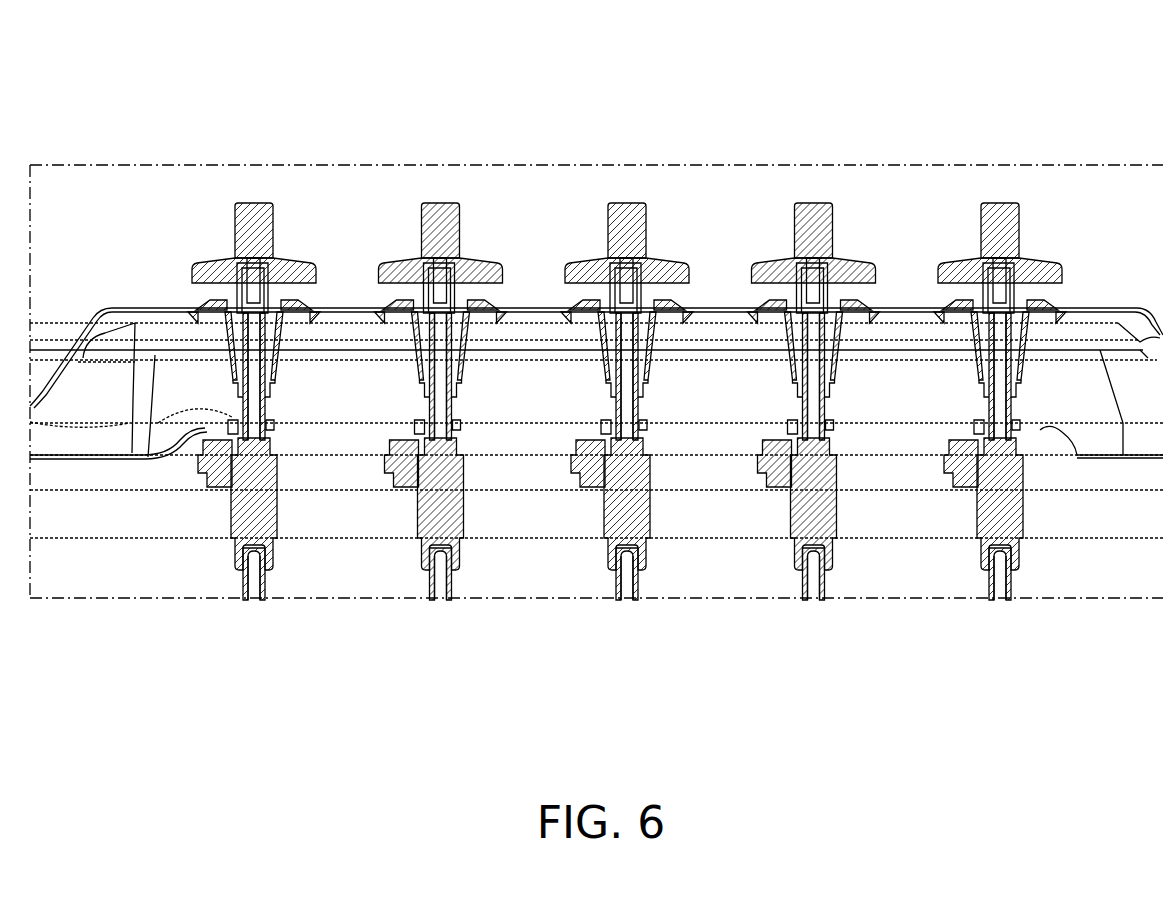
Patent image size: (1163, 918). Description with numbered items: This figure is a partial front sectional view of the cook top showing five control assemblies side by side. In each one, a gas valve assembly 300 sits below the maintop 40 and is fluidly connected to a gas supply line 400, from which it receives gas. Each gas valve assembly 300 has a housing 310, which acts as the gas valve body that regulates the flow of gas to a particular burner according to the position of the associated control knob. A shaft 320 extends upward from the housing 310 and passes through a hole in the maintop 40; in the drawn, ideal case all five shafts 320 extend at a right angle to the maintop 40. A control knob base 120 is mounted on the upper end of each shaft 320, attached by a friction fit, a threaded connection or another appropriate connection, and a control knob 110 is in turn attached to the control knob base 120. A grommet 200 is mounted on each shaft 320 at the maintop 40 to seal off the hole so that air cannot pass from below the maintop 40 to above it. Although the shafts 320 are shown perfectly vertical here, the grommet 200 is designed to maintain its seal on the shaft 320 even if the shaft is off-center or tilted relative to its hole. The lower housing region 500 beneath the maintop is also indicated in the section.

The maintop 40 is at (1087, 307).
The control knob 110 is at (598, 159).
The control knob base 120 is at (627, 156).
The grommet 200 is at (630, 245).
The gas valve assembly 300 is at (574, 543).
The housing 310 is at (640, 585).
The shaft 320 is at (575, 286).
The gas supply line 400 is at (605, 625).
The lower housing 500 is at (1087, 517).